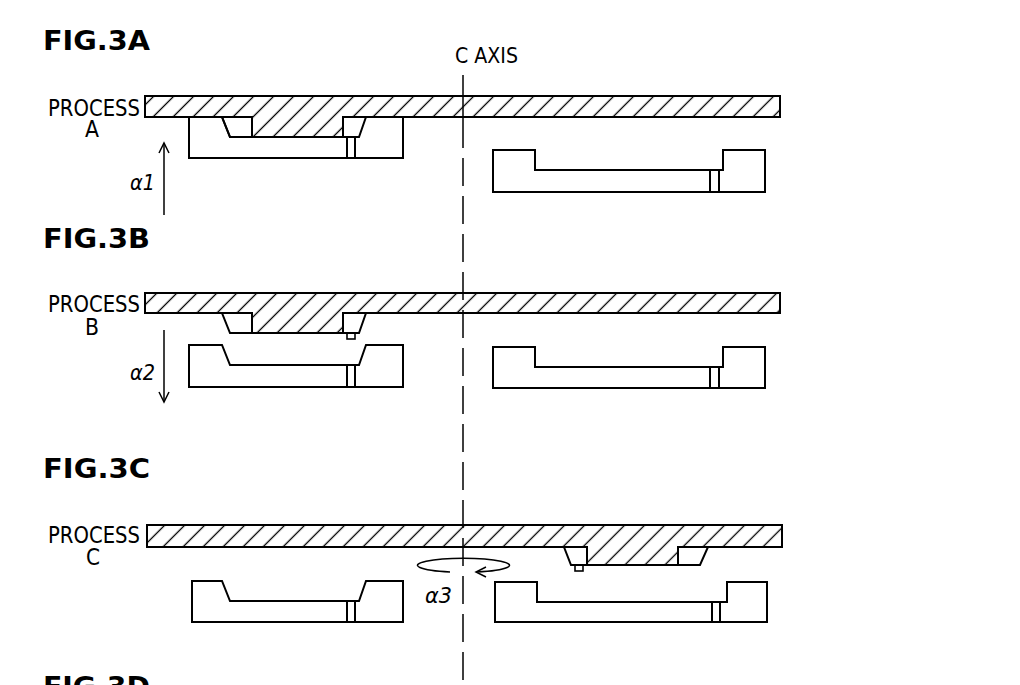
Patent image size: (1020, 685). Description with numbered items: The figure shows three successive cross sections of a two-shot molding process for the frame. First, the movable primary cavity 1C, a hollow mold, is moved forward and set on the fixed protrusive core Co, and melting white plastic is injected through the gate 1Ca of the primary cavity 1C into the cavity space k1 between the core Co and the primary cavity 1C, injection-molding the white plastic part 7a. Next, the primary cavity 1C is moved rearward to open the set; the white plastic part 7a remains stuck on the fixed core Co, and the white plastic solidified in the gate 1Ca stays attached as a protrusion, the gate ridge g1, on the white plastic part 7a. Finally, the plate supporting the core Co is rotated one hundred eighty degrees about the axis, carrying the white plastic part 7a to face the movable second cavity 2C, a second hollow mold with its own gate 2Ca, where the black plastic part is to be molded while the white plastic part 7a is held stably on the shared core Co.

In FIG. 3A, the core Co is at (304, 115).
In FIG. 3B, the core Co is at (304, 311).
In FIG. 3C, the core Co is at (292, 540).
In FIG. 3A, the primary cavity 1C is at (298, 150).
In FIG. 3B, the primary cavity 1C is at (213, 378).
In FIG. 3C, the primary cavity 1C is at (238, 612).
In FIG. 3A, the cavity space k1 is at (242, 130).
In FIG. 3A, the gate 1Ca is at (352, 152).
In FIG. 3A, the second cavity 2C is at (660, 183).
In FIG. 3B, the second cavity 2C is at (662, 378).
In FIG. 3C, the second cavity 2C is at (662, 612).
In FIG. 3A, the gate of second cavity 2Ca is at (715, 192).
In FIG. 3C, the gate of second cavity 2Ca is at (717, 622).
In FIG. 3B, the gate ridge g1 is at (352, 339).
In FIG. 3C, the gate ridge g1 is at (577, 572).
In FIG. 3B, the white plastic part 7a is at (357, 322).
In FIG. 3C, the white plastic part 7a is at (697, 553).